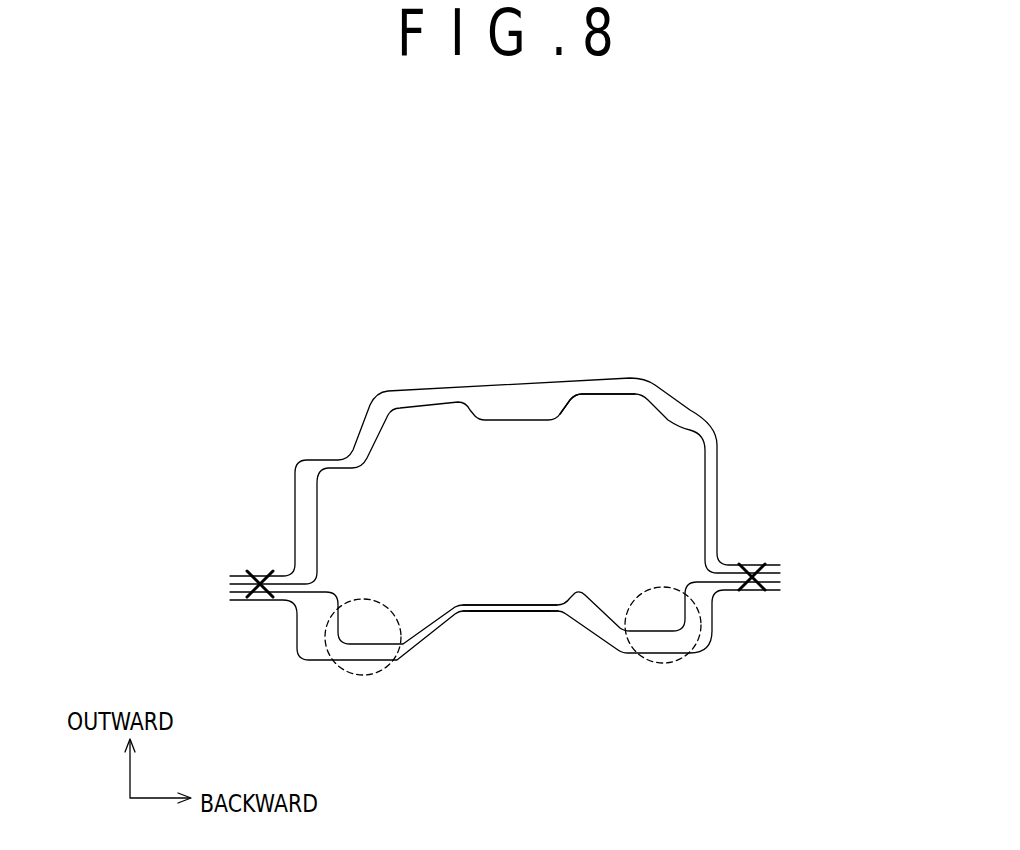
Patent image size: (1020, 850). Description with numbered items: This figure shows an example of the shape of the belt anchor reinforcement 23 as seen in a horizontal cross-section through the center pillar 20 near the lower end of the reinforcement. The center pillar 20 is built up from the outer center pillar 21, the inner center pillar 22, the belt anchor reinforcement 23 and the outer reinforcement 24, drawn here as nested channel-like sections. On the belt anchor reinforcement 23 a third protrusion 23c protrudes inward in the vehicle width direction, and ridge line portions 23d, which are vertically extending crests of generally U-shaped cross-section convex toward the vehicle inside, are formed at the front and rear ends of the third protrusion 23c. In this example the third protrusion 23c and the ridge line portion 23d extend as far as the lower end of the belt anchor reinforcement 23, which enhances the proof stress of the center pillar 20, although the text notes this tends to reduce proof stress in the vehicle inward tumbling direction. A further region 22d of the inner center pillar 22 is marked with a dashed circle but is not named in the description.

The center pillar 20 is at (506, 515).
The outer center pillar 21 is at (502, 382).
The inner center pillar 22 is at (409, 655).
The bent portion of second member 22d is at (355, 644).
The belt anchor reinforcement 23 is at (505, 603).
The third protrusion 23c is at (535, 612).
The ridge line portions 23d is at (657, 631).
The outer reinforcement 24 is at (592, 398).